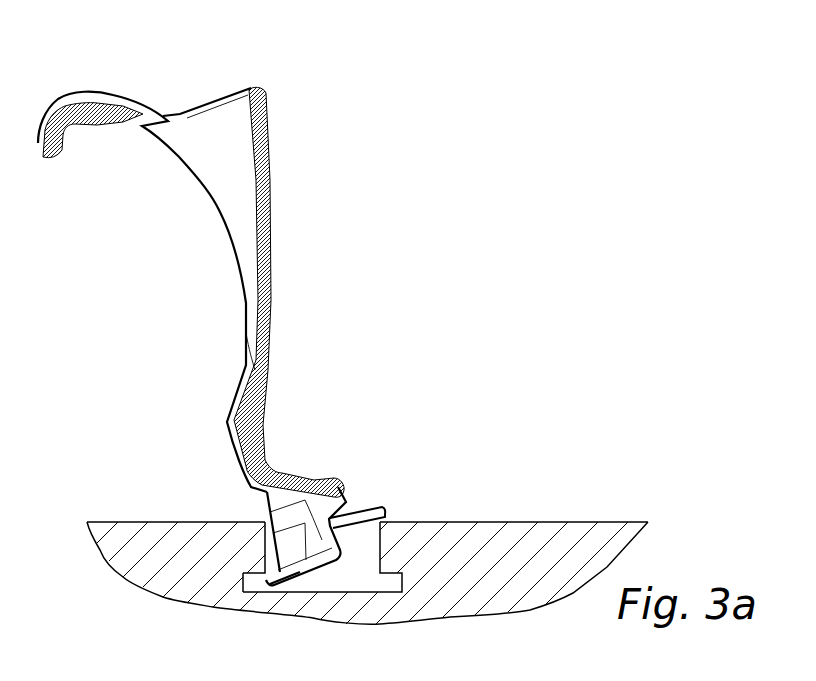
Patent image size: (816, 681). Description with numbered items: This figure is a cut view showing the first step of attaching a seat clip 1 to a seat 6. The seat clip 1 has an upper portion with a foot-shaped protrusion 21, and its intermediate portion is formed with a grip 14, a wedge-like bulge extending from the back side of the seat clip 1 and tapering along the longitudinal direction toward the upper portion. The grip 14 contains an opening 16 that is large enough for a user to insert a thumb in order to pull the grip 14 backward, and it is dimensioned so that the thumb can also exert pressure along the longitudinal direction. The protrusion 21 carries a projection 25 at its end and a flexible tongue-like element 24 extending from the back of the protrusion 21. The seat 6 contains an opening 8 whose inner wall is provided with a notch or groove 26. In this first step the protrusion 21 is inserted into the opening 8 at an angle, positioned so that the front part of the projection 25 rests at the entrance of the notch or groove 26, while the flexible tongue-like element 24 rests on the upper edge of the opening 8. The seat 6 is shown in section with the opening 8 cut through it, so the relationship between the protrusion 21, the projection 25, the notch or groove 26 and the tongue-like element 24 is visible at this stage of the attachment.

The seat clip 1 is at (204, 80).
The grip 14 is at (240, 123).
The opening 16 is at (231, 92).
The protrusion 21 is at (280, 517).
The flexible tongue-like element 24 is at (362, 513).
The opening 8 is at (365, 552).
The seat 6 is at (602, 530).
The notch or groove 26 is at (246, 580).
The projection 25 is at (272, 592).